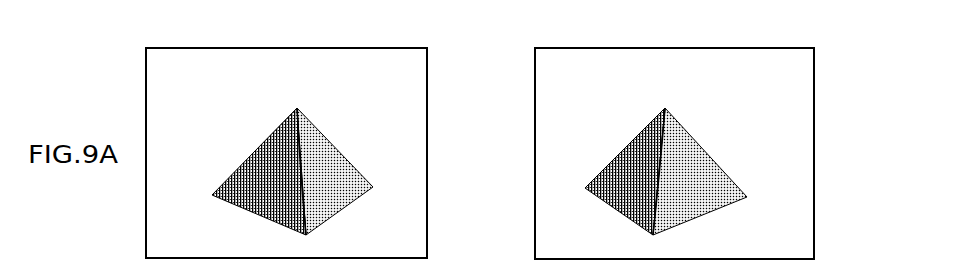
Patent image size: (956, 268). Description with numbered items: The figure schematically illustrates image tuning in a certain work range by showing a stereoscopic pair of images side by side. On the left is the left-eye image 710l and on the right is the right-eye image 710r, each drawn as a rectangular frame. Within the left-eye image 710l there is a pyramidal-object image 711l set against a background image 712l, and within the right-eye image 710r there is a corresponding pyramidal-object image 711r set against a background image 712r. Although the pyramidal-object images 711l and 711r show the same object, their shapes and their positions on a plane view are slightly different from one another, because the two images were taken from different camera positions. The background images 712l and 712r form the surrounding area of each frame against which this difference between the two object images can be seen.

The left-eye image 710l is at (427, 117).
The pyramidal-object image (left) 711l is at (272, 133).
The background image (left) 712l is at (195, 83).
The right-eye image 710r is at (722, 48).
The pyramidal-object image (right) 711r is at (647, 132).
The background image (right) 712r is at (585, 83).